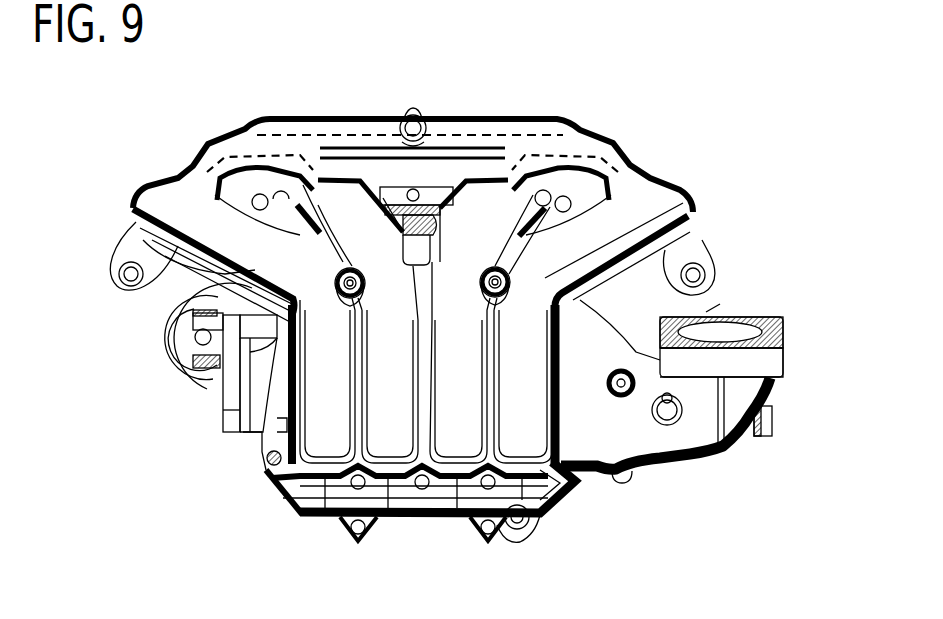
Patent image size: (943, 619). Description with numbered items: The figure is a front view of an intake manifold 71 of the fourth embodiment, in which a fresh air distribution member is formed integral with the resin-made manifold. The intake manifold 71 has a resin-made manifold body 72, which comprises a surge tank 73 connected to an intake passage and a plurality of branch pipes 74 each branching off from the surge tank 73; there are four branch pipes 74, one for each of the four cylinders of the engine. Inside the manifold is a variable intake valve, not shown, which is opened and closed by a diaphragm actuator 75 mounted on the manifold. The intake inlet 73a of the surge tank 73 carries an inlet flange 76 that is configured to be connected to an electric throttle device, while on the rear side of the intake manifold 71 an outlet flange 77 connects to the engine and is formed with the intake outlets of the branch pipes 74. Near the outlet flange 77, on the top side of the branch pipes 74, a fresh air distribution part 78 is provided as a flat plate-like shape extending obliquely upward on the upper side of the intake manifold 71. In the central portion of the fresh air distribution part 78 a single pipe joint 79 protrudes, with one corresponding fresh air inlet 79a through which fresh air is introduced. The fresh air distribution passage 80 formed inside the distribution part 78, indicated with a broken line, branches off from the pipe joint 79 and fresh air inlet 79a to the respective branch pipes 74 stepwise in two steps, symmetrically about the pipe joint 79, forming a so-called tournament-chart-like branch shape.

The intake manifold 71 is at (620, 118).
The manifold body 72 is at (736, 317).
The surge tank 73 is at (687, 440).
The intake inlet 73a is at (735, 332).
The branch pipes 74 is at (300, 485).
The diaphragm actuator 75 is at (180, 360).
The inlet flange 76 is at (775, 362).
The outlet flange 77 is at (690, 250).
The fresh air distribution part 78 is at (343, 132).
The pipe joint 79 is at (428, 130).
The fresh air inlet 79a is at (415, 116).
The fresh air distribution passage 80 is at (497, 125).